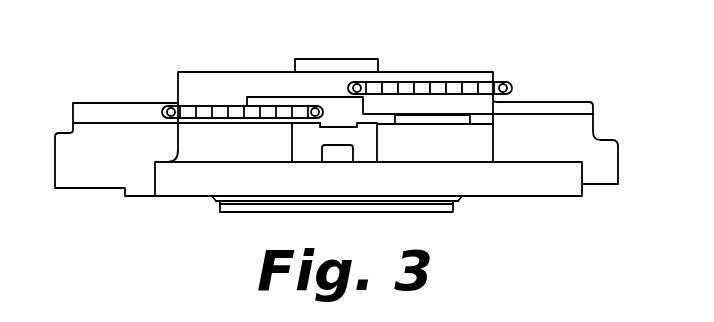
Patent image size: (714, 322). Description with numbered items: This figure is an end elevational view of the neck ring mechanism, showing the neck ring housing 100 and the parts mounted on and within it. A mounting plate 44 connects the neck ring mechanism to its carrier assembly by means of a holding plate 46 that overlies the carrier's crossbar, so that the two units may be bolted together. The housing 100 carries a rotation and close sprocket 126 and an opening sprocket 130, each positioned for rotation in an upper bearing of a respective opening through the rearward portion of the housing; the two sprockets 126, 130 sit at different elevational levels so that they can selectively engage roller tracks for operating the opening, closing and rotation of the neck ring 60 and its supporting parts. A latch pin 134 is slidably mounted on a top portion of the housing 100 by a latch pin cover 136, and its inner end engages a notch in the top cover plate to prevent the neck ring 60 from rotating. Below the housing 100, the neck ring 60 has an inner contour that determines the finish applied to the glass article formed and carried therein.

The mounting plate 44 is at (222, 82).
The holding plate 46 is at (348, 65).
The neck ring 60 is at (437, 208).
The neck ring housing 100 is at (583, 141).
The rotation and close sprocket 126 is at (455, 87).
The opening sprocket 130 is at (203, 107).
The latch pin 134 is at (335, 152).
The latch pin cover 136 is at (365, 138).